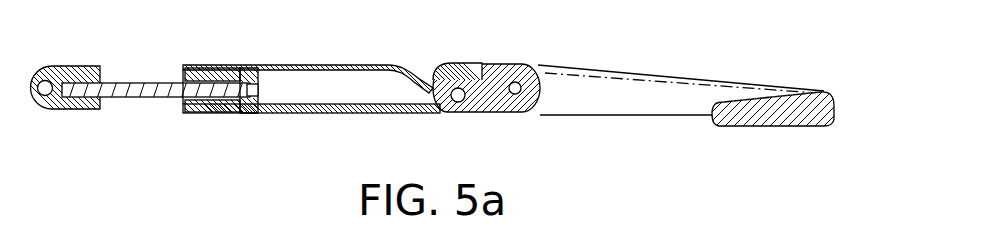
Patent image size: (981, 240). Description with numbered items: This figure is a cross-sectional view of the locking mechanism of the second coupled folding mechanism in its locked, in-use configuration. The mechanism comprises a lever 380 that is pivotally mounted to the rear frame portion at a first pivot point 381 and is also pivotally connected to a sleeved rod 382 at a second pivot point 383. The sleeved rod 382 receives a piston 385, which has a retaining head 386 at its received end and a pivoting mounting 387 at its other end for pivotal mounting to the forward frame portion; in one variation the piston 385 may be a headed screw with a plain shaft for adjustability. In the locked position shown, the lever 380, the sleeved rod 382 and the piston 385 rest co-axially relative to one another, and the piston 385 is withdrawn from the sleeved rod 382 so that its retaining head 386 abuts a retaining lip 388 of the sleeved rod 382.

The lever 380 is at (676, 90).
The first pivot point 381 is at (461, 103).
The sleeved rod 382 is at (333, 113).
The second pivot point 383 is at (518, 80).
The piston 385 is at (132, 98).
The retaining head 386 is at (252, 113).
The pivoting mounting 387 is at (68, 109).
The retaining lip 388 is at (229, 111).